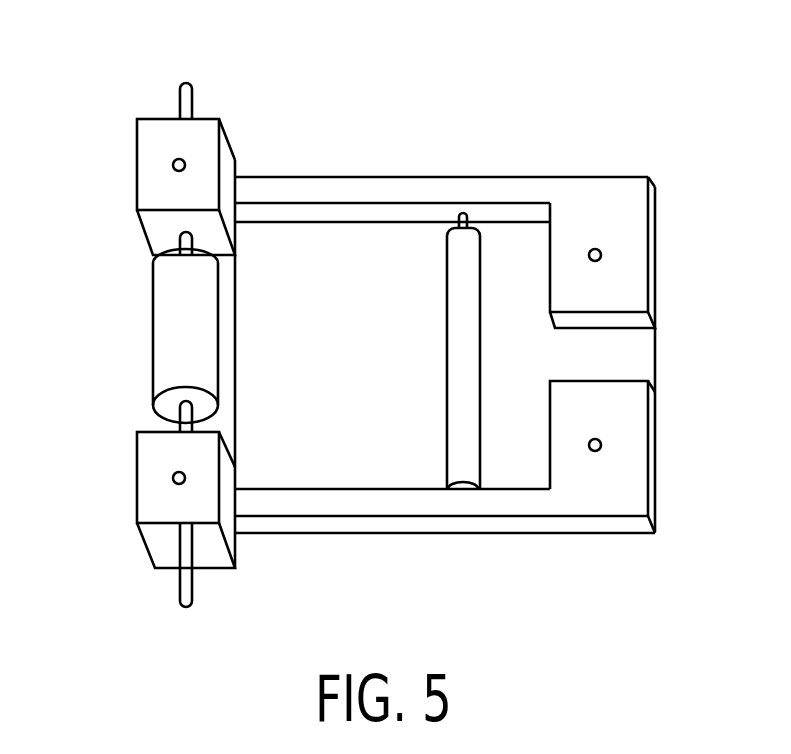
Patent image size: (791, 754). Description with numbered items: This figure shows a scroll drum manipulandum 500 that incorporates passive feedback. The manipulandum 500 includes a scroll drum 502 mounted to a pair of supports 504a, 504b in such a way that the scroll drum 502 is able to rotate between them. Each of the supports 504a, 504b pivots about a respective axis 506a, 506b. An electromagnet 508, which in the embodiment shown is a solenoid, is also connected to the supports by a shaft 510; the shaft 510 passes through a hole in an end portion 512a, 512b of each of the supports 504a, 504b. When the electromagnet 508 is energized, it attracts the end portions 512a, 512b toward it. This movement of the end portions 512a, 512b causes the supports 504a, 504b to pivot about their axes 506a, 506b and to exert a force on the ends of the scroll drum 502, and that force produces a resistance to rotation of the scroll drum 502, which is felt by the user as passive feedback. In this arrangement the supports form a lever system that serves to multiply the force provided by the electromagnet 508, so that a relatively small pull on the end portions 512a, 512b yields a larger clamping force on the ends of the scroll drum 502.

The manipulandum 500 is at (619, 95).
The scroll drum 502 is at (446, 266).
The support 504a is at (545, 176).
The support 504b is at (578, 526).
The axis 506a is at (601, 256).
The axis 506b is at (601, 446).
The electromagnet 508 is at (157, 324).
The shaft 510 is at (179, 588).
The end portion 512a is at (153, 145).
The end portion 512b is at (155, 478).